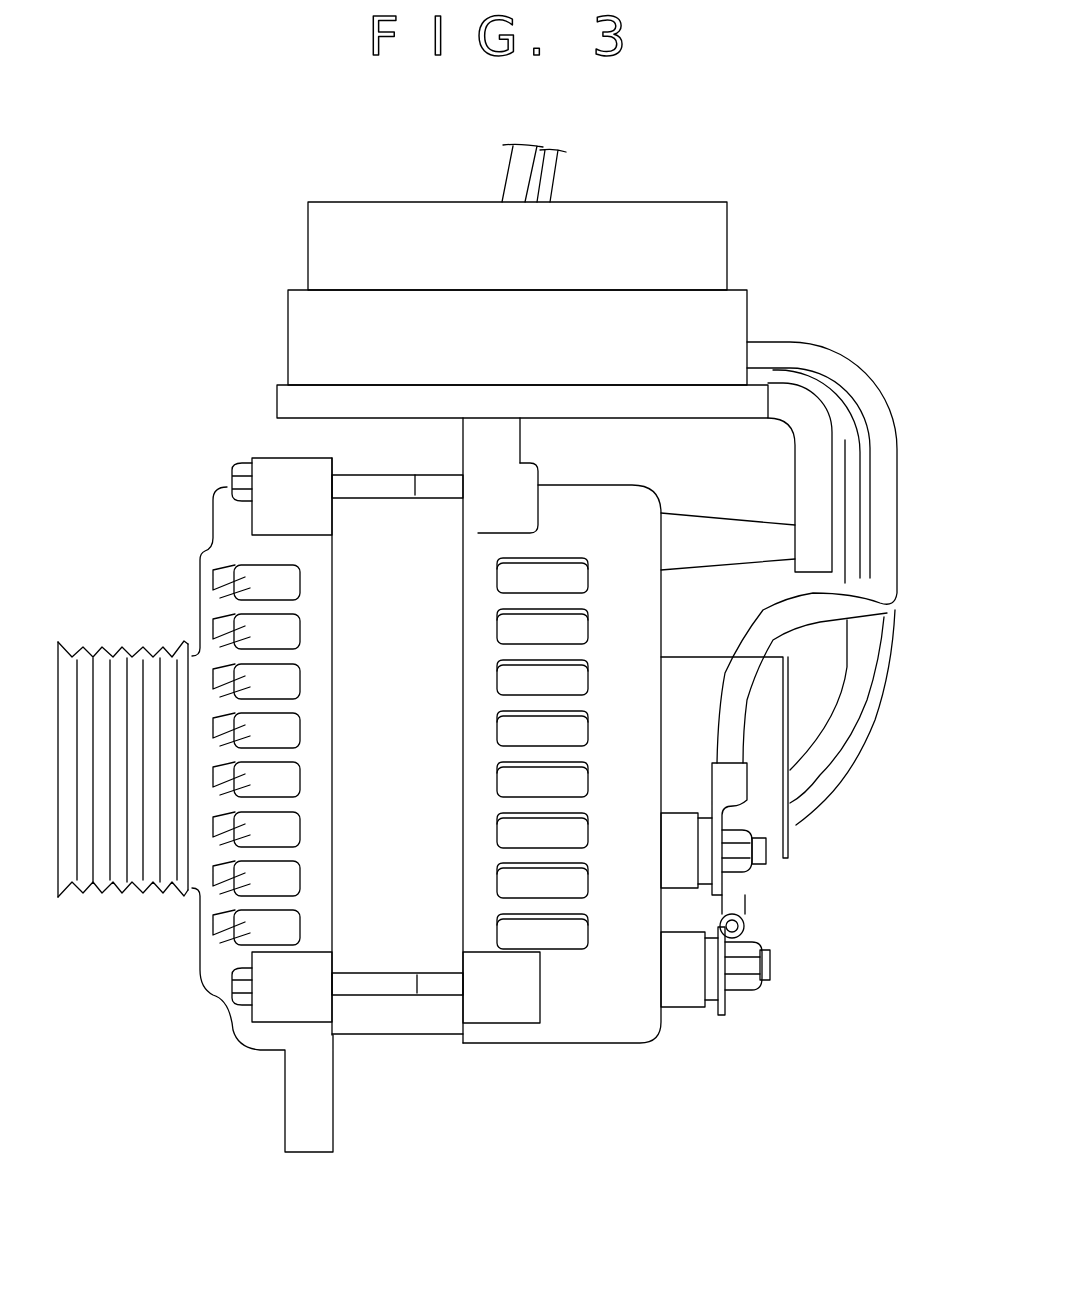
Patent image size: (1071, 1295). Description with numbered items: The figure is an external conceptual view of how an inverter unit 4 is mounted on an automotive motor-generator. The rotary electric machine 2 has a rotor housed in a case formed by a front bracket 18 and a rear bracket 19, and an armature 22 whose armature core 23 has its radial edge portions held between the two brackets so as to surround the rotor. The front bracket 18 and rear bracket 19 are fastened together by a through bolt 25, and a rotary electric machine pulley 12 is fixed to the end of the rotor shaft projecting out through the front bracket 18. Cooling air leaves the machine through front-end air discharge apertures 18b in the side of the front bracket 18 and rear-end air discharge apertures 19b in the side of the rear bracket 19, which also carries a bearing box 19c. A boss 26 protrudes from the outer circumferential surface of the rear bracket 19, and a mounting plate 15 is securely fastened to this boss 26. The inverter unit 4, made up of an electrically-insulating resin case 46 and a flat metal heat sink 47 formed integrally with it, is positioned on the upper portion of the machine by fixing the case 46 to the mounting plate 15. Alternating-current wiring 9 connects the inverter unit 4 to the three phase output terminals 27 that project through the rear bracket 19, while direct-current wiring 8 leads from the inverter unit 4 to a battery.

The rotary electric machine 2 is at (200, 492).
The inverter unit 4 is at (457, 293).
The direct-current wiring 8 is at (562, 165).
The alternating-current wiring 9 is at (837, 340).
The rotary electric machine pulley 12 is at (100, 640).
The mounting plate 15 is at (292, 403).
The front bracket 18 is at (189, 546).
The front-end air discharge apertures 18b is at (255, 590).
The rear bracket 19 is at (583, 1040).
The rear-end air discharge apertures 19b is at (573, 922).
The bearing box 19c is at (770, 802).
The armature 22 is at (427, 1022).
The armature core 23 is at (375, 1025).
The through bolt 25 is at (232, 990).
The boss 26 is at (712, 528).
The three phase output terminals 27 is at (770, 972).
The case 46 is at (300, 330).
The heat sink 47 is at (308, 245).